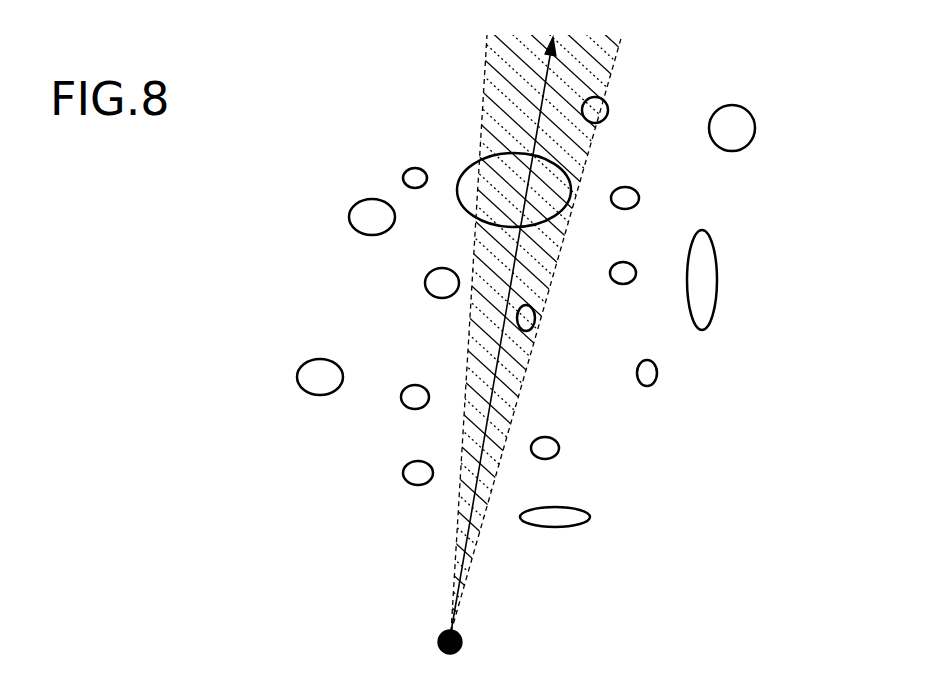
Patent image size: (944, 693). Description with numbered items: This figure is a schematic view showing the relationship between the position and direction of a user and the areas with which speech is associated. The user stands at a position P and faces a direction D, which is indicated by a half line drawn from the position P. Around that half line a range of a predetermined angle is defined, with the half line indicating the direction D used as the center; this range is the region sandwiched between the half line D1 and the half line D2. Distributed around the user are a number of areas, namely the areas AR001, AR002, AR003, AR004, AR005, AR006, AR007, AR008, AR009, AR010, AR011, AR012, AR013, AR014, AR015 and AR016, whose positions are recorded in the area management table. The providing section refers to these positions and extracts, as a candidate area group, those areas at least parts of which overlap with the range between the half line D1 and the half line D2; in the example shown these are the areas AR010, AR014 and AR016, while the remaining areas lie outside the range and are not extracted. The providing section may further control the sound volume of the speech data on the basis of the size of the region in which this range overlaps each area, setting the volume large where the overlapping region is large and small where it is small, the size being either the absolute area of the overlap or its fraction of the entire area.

The area region 001 AR001 is at (320, 358).
The area region 002 AR002 is at (363, 198).
The area region 003 AR003 is at (414, 166).
The area region 004 AR004 is at (427, 285).
The area region 005 AR005 is at (416, 386).
The area region 006 AR006 is at (413, 463).
The area region 007 AR007 is at (562, 424).
The area region 008 AR008 is at (598, 497).
The area region 009 AR009 is at (678, 360).
The area AR010 is at (536, 318).
The area region 011 AR011 is at (641, 248).
The area region 012 AR012 is at (715, 247).
The area region 013 AR013 is at (637, 198).
The area AR014 is at (609, 110).
The area region 015 AR015 is at (734, 106).
The area AR016 is at (562, 172).
The direction D is at (554, 66).
The half line D1 is at (487, 72).
The half line D2 is at (624, 60).
The position P is at (464, 640).